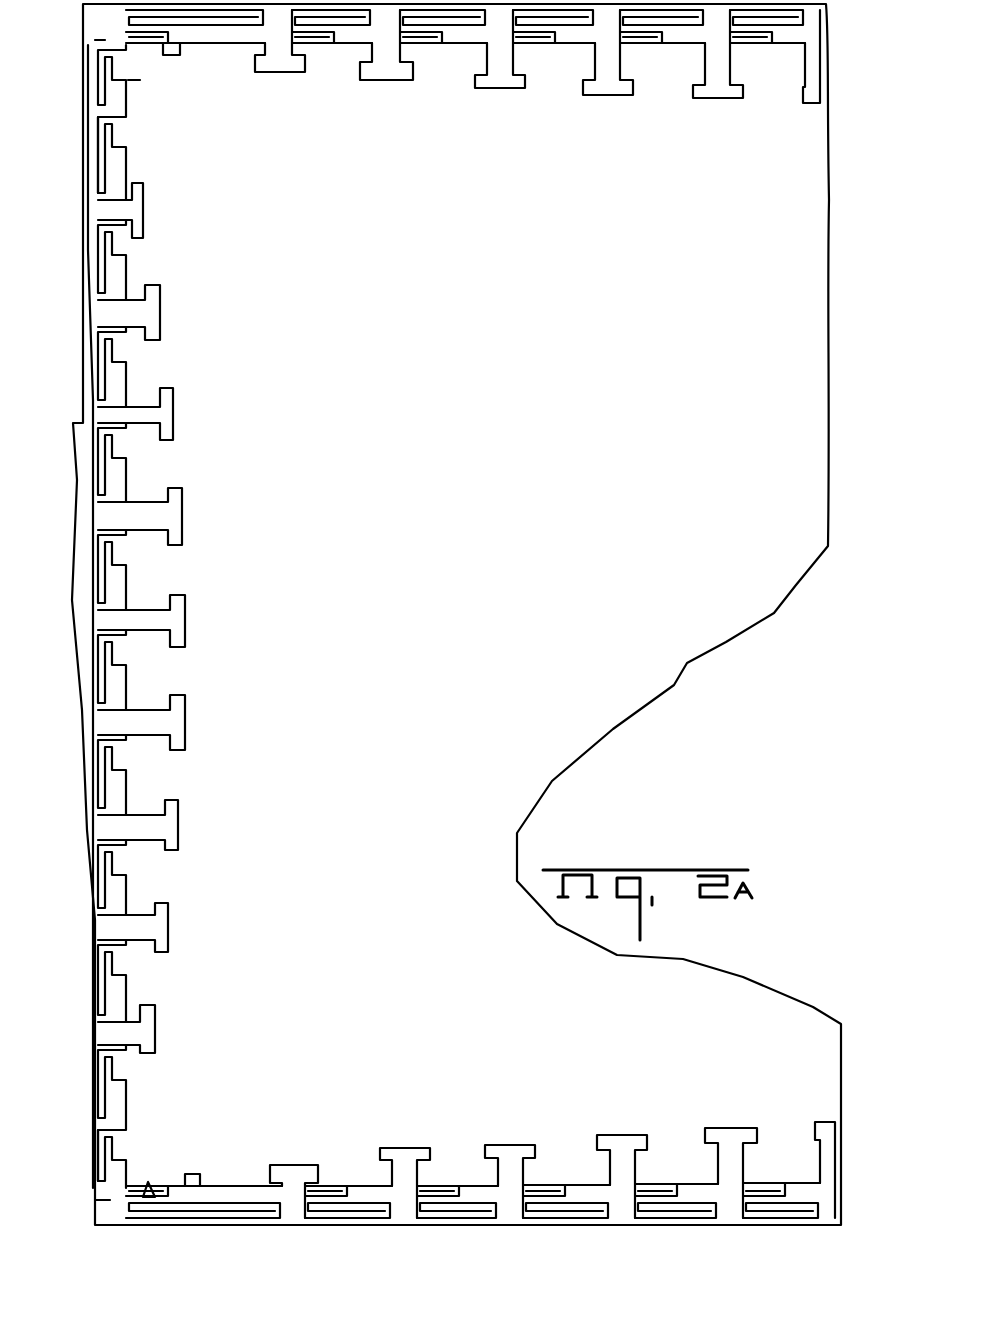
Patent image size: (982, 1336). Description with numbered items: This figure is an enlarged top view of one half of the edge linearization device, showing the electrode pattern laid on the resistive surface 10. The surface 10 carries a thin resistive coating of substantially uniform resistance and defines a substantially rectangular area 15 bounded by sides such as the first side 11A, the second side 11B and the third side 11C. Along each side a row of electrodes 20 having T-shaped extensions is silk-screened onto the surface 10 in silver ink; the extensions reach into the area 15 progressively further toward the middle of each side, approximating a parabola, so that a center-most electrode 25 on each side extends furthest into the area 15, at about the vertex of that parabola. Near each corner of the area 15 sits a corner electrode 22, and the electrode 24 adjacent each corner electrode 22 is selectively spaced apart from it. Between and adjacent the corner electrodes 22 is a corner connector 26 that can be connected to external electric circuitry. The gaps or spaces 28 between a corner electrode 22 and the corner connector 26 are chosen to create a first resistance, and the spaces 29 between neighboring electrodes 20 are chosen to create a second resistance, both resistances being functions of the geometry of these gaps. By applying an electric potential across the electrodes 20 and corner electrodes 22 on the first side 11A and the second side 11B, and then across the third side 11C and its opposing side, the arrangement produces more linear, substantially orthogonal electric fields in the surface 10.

The surface 10 is at (392, 901).
The first side 11A is at (471, 0).
The second side 11B is at (122, 1232).
The third side 11C is at (83, 261).
The substantially rectangular area 15 is at (522, 531).
The electrodes 20 is at (513, 88).
The corner electrodes 22 is at (120, 124).
The electrode adjacent corner electrode 24 is at (284, 64).
The center-most electrode 25 is at (806, 102).
The corner connector 26 is at (98, 40).
The spaces between corner electrode and corner connector 28 is at (140, 46).
The spaces between electrodes 29 is at (93, 196).